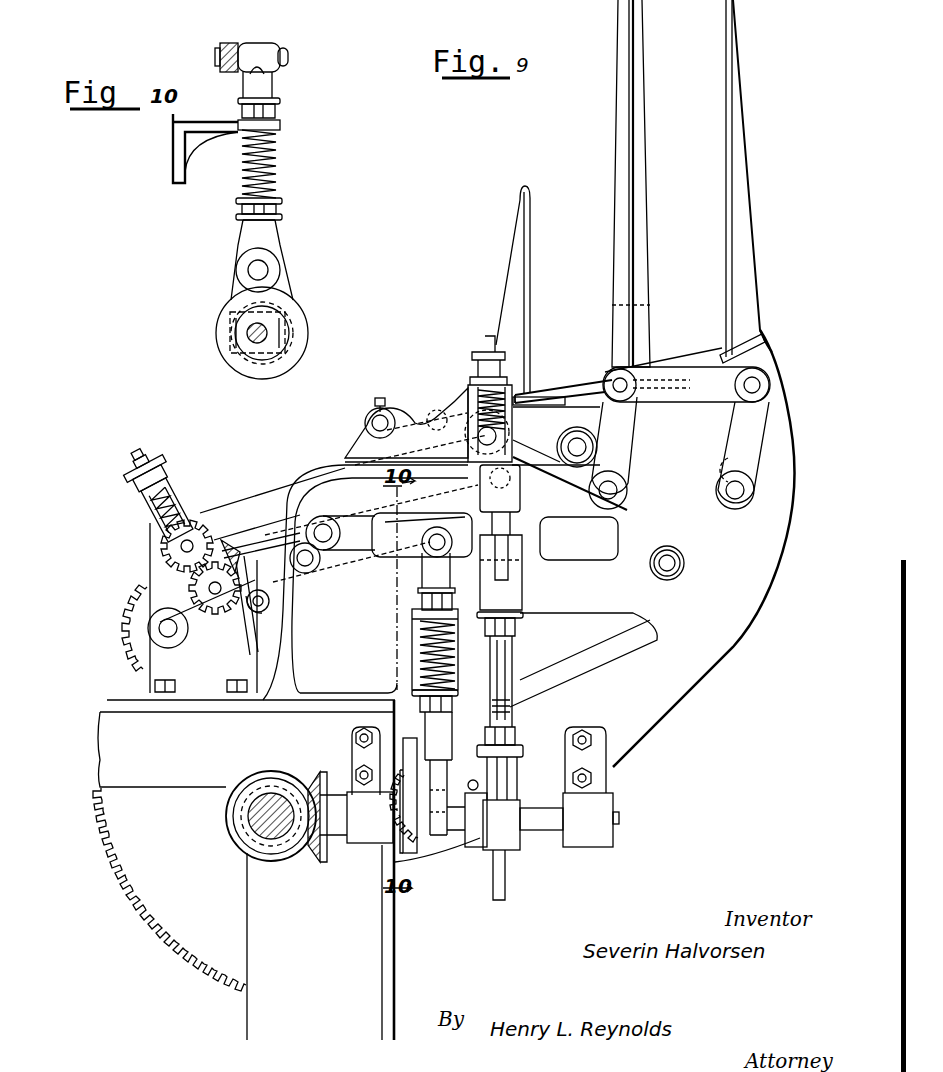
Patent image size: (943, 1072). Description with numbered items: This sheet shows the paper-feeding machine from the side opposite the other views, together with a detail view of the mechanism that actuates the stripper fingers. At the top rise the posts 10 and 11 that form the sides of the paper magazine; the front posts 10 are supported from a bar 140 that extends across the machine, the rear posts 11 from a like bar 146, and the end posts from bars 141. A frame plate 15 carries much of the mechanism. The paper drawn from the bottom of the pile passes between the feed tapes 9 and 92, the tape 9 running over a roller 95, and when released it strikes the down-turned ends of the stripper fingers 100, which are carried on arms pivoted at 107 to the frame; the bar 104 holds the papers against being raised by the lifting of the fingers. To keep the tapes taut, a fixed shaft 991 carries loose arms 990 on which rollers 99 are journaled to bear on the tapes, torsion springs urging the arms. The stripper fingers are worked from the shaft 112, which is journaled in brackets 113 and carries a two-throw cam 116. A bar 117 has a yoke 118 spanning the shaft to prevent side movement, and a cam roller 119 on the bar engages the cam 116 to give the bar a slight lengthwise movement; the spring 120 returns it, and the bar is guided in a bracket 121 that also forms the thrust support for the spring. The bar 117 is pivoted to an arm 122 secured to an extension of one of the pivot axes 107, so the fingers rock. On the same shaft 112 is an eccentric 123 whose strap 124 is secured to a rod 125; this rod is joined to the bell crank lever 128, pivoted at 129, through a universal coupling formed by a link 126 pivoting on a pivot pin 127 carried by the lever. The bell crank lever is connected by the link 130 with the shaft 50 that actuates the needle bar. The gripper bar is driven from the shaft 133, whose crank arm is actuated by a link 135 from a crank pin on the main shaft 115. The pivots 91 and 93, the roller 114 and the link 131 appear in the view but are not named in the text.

In FIG. 9, the feed tape 9 is at (437, 527).
In FIG. 9, the posts 10 is at (530, 241).
In FIG. 9, the posts 11 is at (640, 93).
In FIG. 9, the frame plate 15 is at (745, 601).
In FIG. 9, the shaft 50 is at (736, 500).
In FIG. 9, the pivot pin 91 is at (575, 440).
In FIG. 9, the feed tape 92 is at (245, 505).
In FIG. 9, the spring plunger 93 is at (497, 435).
In FIG. 9, the roller 95 is at (257, 577).
In FIG. 9, the roller 99 is at (442, 410).
In FIG. 9, the stripper fingers 100 is at (263, 540).
In FIG. 9, the bar 104 is at (232, 556).
In FIG. 9, the pivot 107 is at (360, 512).
In FIG. 10, the shaft 112 is at (254, 341).
In FIG. 9, the shaft 112 is at (550, 826).
In FIG. 9, the brackets 113 is at (591, 837).
In FIG. 9, the bevel gear 114 is at (312, 850).
In FIG. 9, the main shaft 115 is at (278, 798).
In FIG. 10, the two throw cam 116 is at (290, 358).
In FIG. 9, the two throw cam 116 is at (408, 820).
In FIG. 10, the bar 117 is at (275, 230).
In FIG. 9, the bar 117 is at (428, 747).
In FIG. 10, the yoke 118 is at (288, 338).
In FIG. 9, the yoke 118 is at (440, 835).
In FIG. 10, the cam roller 119 is at (280, 270).
In FIG. 9, the cam roller 119 is at (410, 759).
In FIG. 10, the spring 120 is at (278, 172).
In FIG. 9, the spring 120 is at (420, 652).
In FIG. 10, the bracket 121 is at (280, 125).
In FIG. 9, the bracket 121 is at (412, 613).
In FIG. 10, the arm 122 is at (232, 42).
In FIG. 9, the arm 122 is at (425, 553).
In FIG. 9, the eccentric 123 is at (513, 870).
In FIG. 9, the eccentric strap 124 is at (505, 897).
In FIG. 9, the rod 125 is at (503, 658).
In FIG. 9, the link 126 is at (522, 520).
In FIG. 9, the pivot pin 127 is at (496, 479).
In FIG. 9, the bell crank lever 128 is at (618, 458).
In FIG. 9, the pivot 129 is at (625, 491).
In FIG. 9, the link 130 is at (713, 398).
In FIG. 9, the link 131 is at (737, 450).
In FIG. 9, the shaft 133 is at (678, 563).
In FIG. 9, the link 135 is at (548, 682).
In FIG. 9, the bar 140 is at (532, 397).
In FIG. 9, the bars 141 is at (598, 377).
In FIG. 9, the bar 146 is at (768, 345).
In FIG. 9, the arms 990 is at (403, 407).
In FIG. 9, the fixed shaft 991 is at (365, 420).